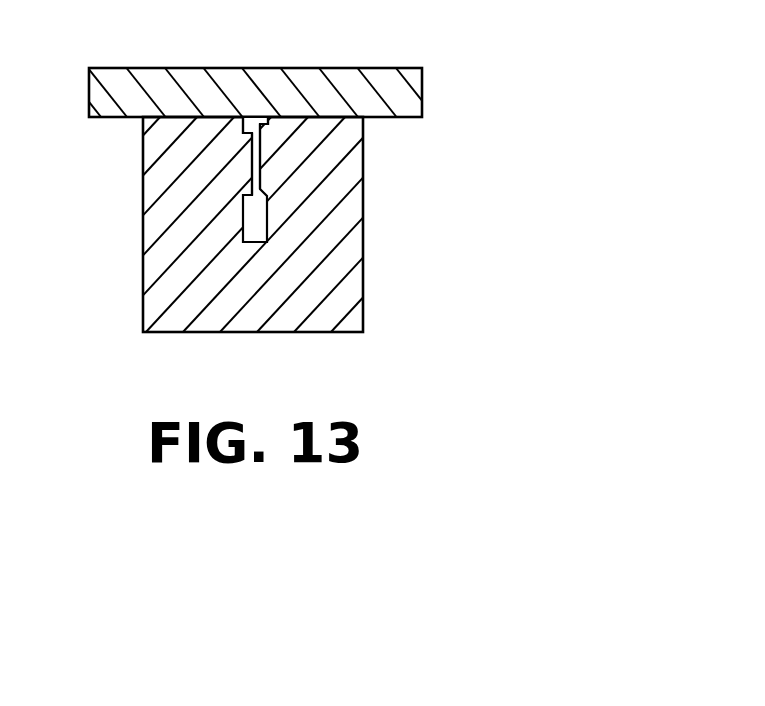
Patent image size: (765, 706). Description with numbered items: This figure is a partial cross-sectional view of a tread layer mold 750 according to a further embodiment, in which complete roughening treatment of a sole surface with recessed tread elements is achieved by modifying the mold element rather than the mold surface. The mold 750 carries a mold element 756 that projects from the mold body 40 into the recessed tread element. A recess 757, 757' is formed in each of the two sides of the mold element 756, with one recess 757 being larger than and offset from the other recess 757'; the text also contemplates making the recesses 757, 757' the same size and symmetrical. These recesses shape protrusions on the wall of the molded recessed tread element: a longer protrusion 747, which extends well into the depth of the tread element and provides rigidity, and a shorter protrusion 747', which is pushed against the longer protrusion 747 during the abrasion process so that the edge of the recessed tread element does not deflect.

The mold 750 is at (268, 58).
The body 40 is at (343, 303).
The mold element 756 is at (250, 221).
The recess 757 is at (162, 159).
The longer protrusion 747 is at (161, 189).
The recess 757' is at (362, 158).
The shorter protrusion 747' is at (362, 184).